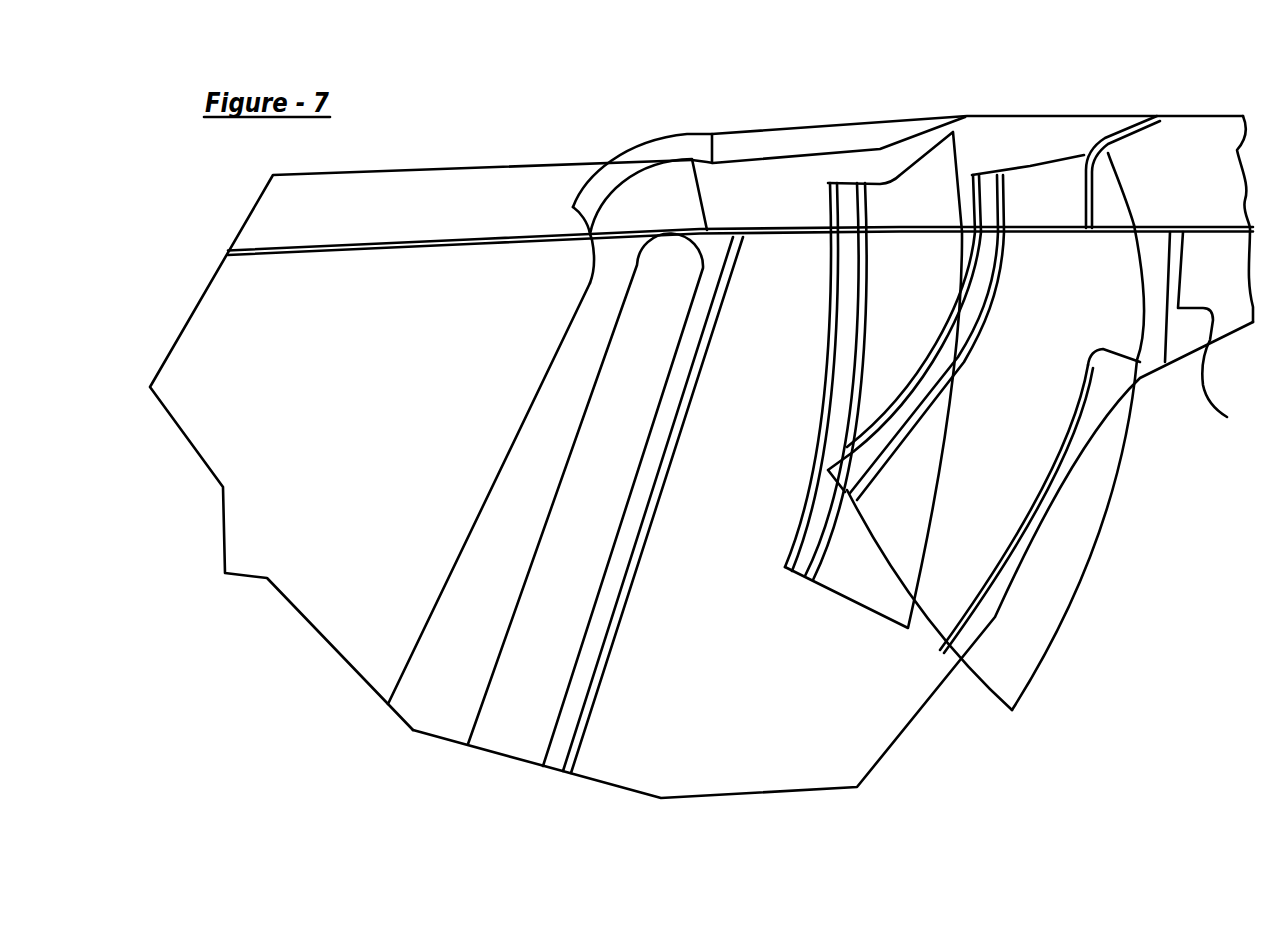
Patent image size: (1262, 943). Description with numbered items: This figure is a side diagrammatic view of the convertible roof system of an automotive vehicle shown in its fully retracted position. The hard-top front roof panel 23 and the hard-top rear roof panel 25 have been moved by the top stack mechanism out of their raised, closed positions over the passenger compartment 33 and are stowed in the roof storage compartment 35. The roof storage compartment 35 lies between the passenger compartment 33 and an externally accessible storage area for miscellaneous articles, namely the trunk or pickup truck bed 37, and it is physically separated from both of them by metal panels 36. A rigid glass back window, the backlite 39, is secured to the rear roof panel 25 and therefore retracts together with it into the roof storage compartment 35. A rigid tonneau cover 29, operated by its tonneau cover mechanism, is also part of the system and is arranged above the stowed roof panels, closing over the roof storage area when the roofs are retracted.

The hard-top front roof panel 23 is at (863, 580).
The hard-top rear roof panel 25 is at (1047, 180).
The rigid tonneau cover 29 is at (1010, 143).
The passenger compartment 33 is at (335, 530).
The roof storage compartment 35 is at (818, 724).
The metal panels 36 is at (595, 684).
The trunk or pickup truck bed 37 is at (1240, 181).
The backlite 39 is at (1050, 565).